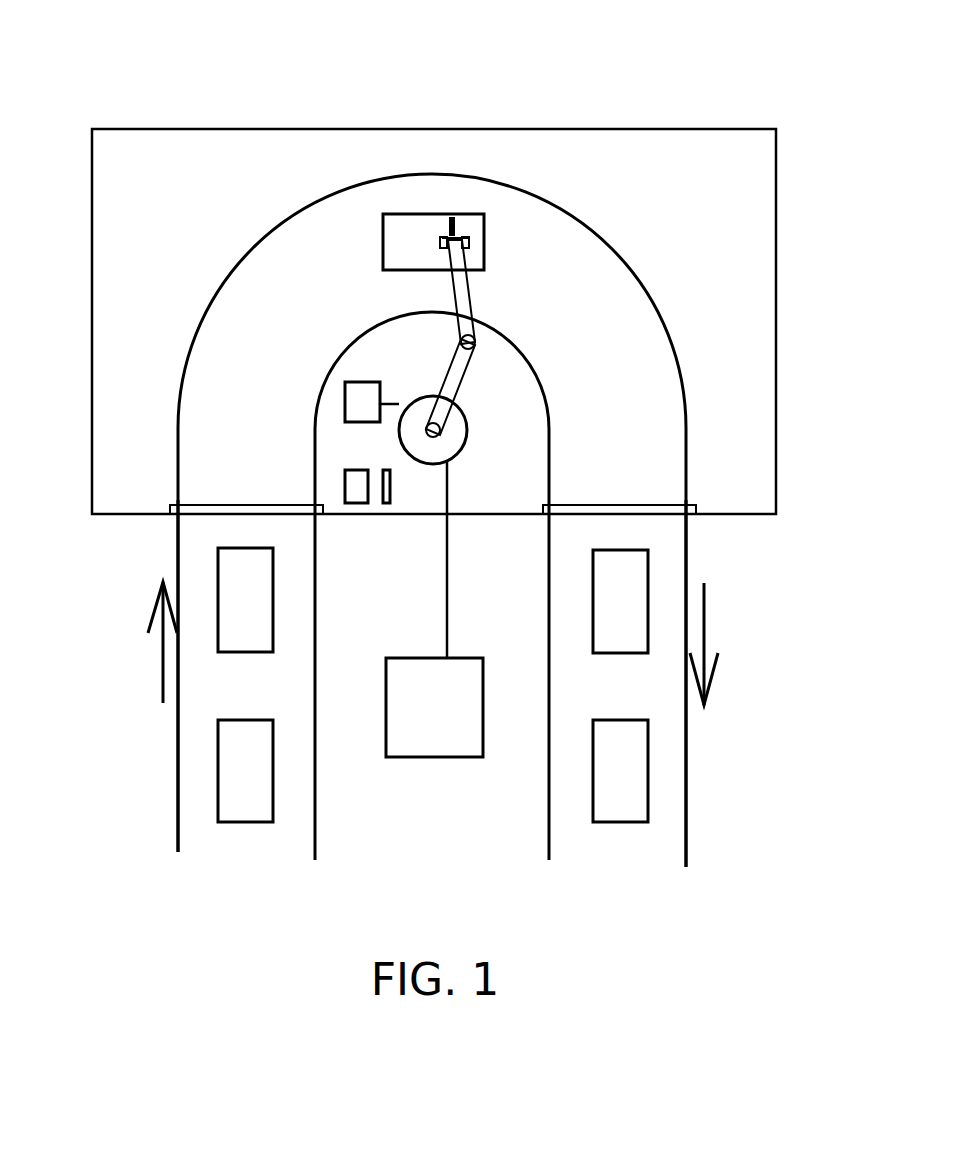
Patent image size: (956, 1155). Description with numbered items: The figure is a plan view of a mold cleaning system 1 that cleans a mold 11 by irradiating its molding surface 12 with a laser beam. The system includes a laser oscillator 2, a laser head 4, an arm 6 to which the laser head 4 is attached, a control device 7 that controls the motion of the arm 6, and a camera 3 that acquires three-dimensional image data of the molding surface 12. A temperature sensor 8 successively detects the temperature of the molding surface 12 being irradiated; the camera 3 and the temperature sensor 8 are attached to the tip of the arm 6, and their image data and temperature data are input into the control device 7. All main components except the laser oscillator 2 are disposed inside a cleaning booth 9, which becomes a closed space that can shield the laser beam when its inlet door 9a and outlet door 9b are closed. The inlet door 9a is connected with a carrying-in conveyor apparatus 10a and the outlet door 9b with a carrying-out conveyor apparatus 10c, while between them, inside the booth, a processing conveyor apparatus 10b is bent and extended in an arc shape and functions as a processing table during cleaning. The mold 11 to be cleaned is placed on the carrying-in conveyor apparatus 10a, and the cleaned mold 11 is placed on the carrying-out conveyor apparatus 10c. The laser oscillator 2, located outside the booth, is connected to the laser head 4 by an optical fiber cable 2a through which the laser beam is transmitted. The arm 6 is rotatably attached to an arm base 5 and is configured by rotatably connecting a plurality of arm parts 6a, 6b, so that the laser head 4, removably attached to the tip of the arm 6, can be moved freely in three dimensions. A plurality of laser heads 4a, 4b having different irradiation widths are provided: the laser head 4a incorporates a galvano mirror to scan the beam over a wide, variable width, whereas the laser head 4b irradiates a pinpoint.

The mold cleaning system 1 is at (610, 112).
The laser oscillator 2 is at (438, 746).
The optical fiber cable 2a is at (452, 500).
The camera 3 is at (440, 240).
The laser head 4 is at (417, 397).
The laser head having relatively large laser irradiation width 4a is at (355, 504).
The laser head having relatively small laser irradiation width 4b is at (388, 504).
The arm base 5 is at (465, 446).
The arm 6 is at (460, 550).
The arm part 6a is at (470, 295).
The arm part 6b is at (483, 386).
The control device 7 is at (365, 400).
The temperature sensor 8 is at (470, 246).
The cleaning booth 9 is at (397, 524).
The inlet door 9a is at (235, 508).
The outlet door 9b is at (625, 508).
The carrying-in conveyor apparatus 10a is at (186, 752).
The processing conveyor apparatus 10b is at (232, 292).
The carrying-out conveyor apparatus 10c is at (672, 757).
The mold 11 is at (383, 240).
The molding surface 12 is at (400, 250).